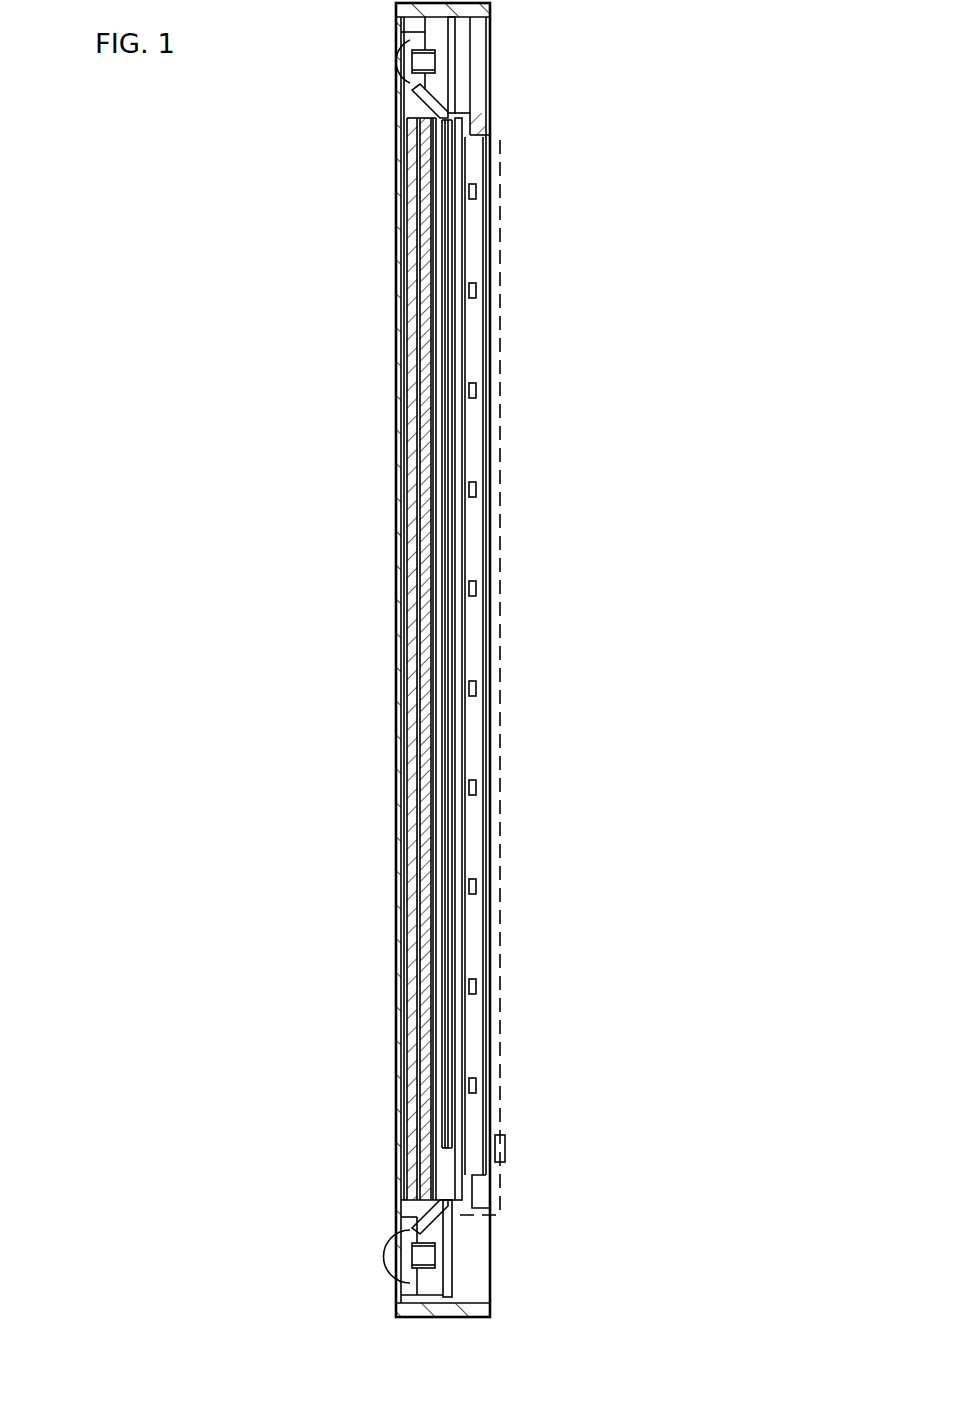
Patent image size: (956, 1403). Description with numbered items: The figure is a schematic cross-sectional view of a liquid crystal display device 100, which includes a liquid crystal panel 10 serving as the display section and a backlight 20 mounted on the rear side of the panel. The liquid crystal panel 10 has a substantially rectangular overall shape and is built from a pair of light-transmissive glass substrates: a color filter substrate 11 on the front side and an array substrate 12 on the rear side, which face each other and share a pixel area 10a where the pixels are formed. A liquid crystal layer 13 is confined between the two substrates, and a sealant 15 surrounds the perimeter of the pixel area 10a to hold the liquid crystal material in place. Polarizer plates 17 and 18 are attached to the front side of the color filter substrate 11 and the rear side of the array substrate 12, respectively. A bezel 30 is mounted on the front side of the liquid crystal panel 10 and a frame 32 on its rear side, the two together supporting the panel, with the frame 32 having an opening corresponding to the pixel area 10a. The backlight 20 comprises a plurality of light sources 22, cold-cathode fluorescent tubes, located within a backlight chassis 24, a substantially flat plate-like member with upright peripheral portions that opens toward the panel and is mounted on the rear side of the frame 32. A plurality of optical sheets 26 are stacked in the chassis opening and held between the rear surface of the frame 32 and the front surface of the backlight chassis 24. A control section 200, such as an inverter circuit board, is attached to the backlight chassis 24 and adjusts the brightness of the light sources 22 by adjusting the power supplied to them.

The liquid crystal display device 100 is at (350, 511).
The liquid crystal panel 10 is at (392, 1078).
The pixel area 10a is at (392, 595).
The color filter substrate 11 is at (410, 738).
The array substrate 12 is at (424, 688).
The liquid crystal layer 13 is at (406, 814).
The sealant 15 is at (415, 1200).
The polarizer plate 17 is at (401, 997).
The polarizer plate 18 is at (440, 888).
The backlight 20 is at (545, 125).
The light sources 22 is at (477, 190).
The backlight chassis 24 is at (500, 822).
The optical sheets 26 is at (460, 427).
The bezel 30 is at (408, 1160).
The frame 32 is at (444, 1230).
The control section 200 is at (503, 1162).